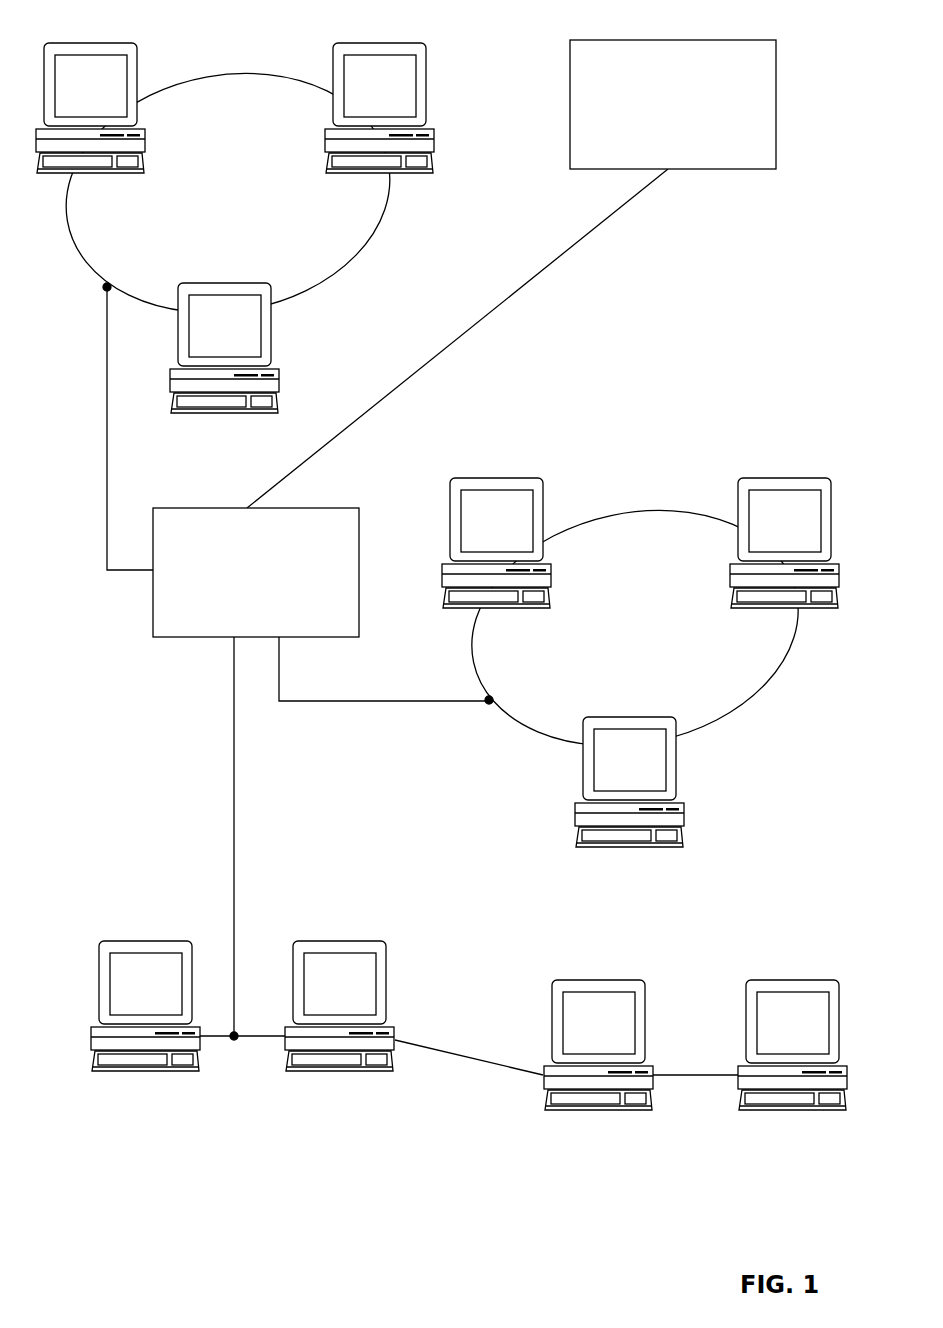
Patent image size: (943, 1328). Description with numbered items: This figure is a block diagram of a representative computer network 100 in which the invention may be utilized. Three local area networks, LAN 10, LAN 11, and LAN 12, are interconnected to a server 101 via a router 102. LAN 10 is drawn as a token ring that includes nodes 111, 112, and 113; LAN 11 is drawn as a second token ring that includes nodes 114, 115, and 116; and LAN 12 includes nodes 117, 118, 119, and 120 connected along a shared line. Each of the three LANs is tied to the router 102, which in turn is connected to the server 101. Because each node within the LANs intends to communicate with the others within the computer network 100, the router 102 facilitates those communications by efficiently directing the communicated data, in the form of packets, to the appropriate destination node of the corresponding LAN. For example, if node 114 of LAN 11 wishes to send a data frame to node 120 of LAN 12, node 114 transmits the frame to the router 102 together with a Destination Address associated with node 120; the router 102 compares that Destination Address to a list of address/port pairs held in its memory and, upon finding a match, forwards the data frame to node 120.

The computer network 100 is at (814, 56).
The LAN 10 is at (248, 111).
The LAN 11 is at (653, 546).
The LAN 12 is at (686, 957).
The server 101 is at (720, 74).
The router 102 is at (302, 542).
The node 111 is at (116, 108).
The node 112 is at (405, 108).
The node 113 is at (250, 348).
The node 114 is at (522, 543).
The node 115 is at (810, 543).
The node 116 is at (655, 782).
The node 117 is at (141, 1026).
The node 118 is at (335, 1026).
The node 119 is at (594, 1065).
The node 120 is at (788, 1065).